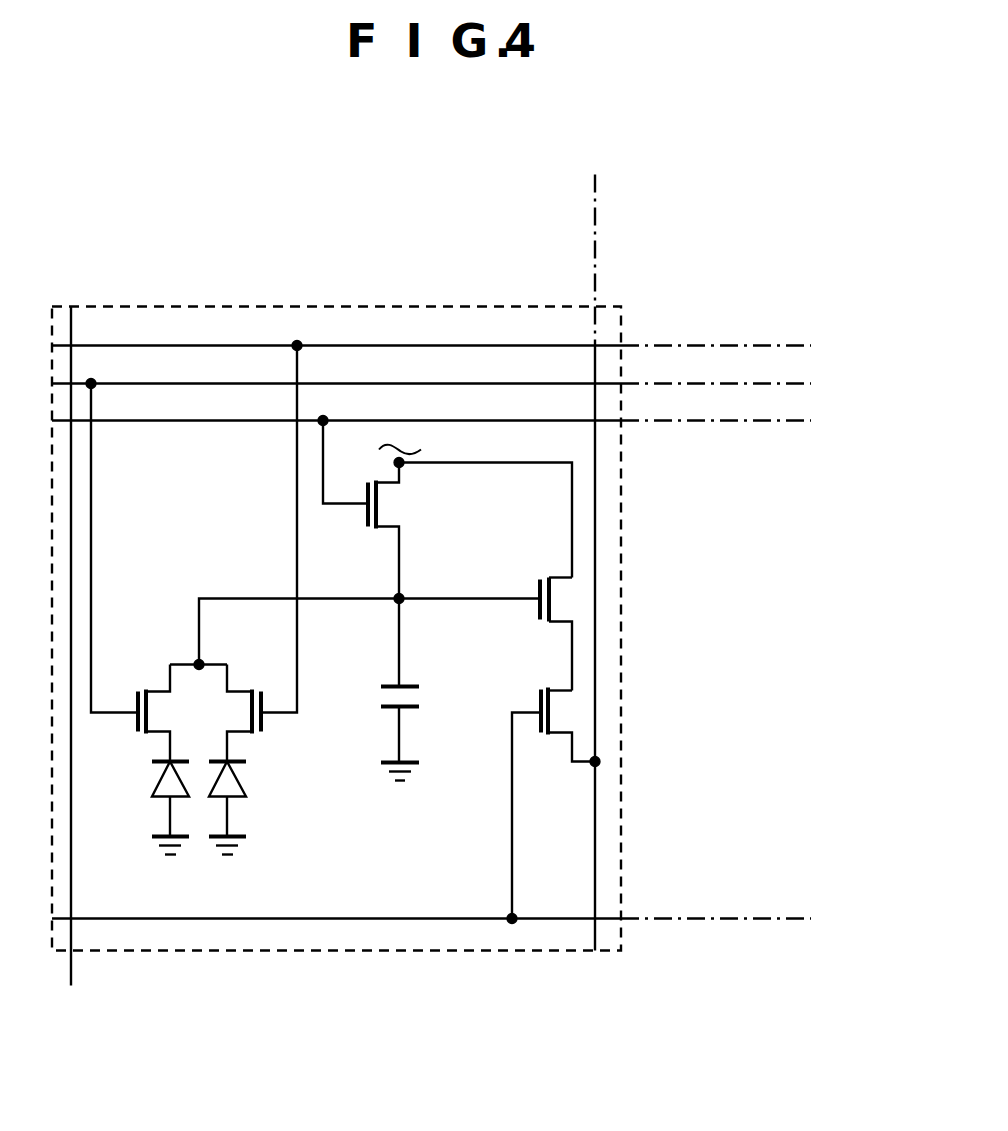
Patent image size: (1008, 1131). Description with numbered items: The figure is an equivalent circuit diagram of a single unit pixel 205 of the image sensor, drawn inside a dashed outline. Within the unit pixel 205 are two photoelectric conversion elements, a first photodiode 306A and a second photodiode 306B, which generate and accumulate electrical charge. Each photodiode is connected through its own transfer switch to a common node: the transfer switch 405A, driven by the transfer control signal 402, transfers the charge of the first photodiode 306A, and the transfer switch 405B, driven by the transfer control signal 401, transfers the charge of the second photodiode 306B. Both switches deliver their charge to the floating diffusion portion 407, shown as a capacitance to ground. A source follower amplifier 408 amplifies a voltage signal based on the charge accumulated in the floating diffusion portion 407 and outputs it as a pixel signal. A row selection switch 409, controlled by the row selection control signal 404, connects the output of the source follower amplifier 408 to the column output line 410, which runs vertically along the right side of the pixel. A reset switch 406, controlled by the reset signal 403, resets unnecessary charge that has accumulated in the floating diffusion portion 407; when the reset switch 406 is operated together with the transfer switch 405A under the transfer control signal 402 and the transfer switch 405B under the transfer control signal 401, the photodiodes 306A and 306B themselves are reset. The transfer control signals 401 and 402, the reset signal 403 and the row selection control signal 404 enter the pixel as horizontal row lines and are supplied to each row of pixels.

The unit pixel 205 is at (622, 522).
The first photodiode 306A is at (153, 797).
The second photodiode 306B is at (243, 786).
The transfer control signal 401 is at (775, 347).
The transfer control signal 402 is at (775, 385).
The reset signal 403 is at (775, 422).
The row selection control signal 404 is at (775, 920).
The transfer switch 405A is at (138, 696).
The transfer switch 405B is at (266, 694).
The reset switch 406 is at (395, 507).
The floating diffusion portion 407 is at (450, 666).
The source follower amplifier 408 is at (540, 582).
The row selection switch 409 is at (542, 696).
The column output line 410 is at (600, 190).